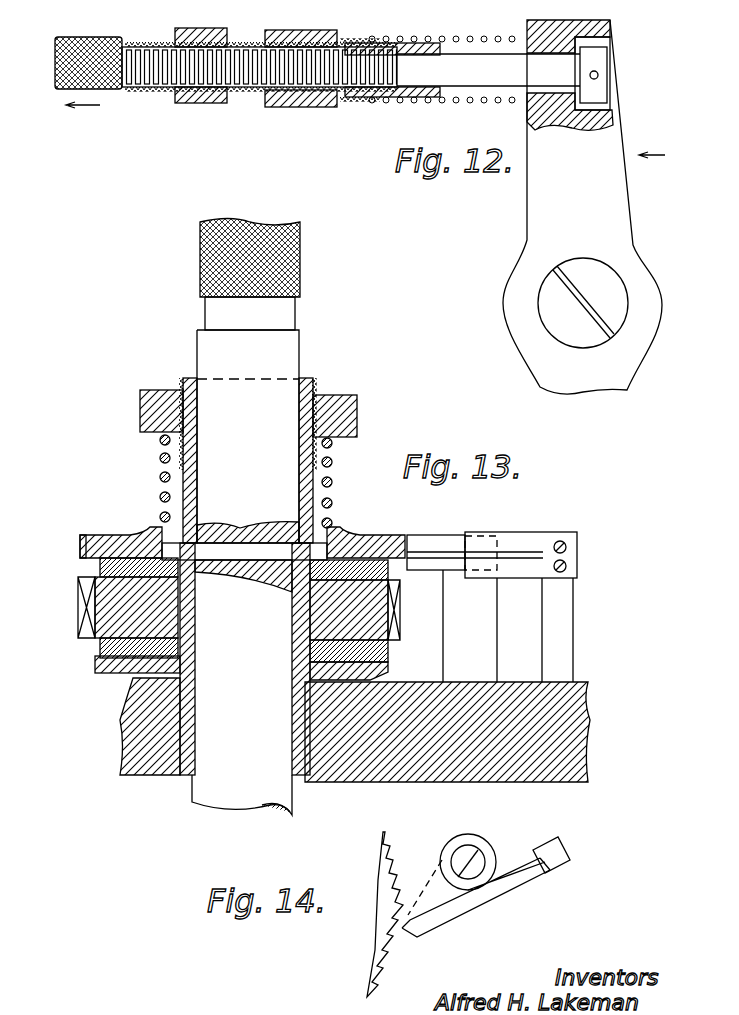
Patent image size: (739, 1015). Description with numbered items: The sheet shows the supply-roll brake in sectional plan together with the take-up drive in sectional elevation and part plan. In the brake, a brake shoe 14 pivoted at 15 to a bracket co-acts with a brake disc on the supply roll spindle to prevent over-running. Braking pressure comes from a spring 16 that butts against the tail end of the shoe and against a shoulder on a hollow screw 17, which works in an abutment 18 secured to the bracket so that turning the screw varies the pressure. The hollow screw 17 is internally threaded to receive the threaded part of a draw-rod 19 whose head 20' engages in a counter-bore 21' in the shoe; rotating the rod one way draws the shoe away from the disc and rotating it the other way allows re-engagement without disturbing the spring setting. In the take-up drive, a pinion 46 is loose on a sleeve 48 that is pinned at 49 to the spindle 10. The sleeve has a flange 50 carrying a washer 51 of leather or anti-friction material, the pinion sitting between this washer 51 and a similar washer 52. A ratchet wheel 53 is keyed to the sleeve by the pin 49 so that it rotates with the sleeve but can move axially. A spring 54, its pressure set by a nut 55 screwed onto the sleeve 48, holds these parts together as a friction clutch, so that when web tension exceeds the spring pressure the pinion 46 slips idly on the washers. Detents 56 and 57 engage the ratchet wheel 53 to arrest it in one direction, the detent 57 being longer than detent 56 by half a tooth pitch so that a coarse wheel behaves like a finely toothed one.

In FIG. 13, the spindle 10 is at (200, 788).
In FIG. 12, the brake shoe 14 is at (545, 362).
In FIG. 12, the pivot 15 is at (545, 289).
In FIG. 12, the spring 16 is at (392, 103).
In FIG. 12, the hollow screw 17 is at (256, 100).
In FIG. 12, the abutment 18 is at (304, 108).
In FIG. 12, the draw-rod 19 is at (474, 78).
In FIG. 12, the head 20' is at (491, 94).
In FIG. 12, the counter-bore 21' is at (593, 104).
In FIG. 13, the pinion 46 is at (85, 606).
In FIG. 13, the sleeve 48 is at (312, 482).
In FIG. 13, the pin 49 is at (262, 552).
In FIG. 13, the flange 50 is at (108, 673).
In FIG. 13, the washer 51 is at (100, 647).
In FIG. 13, the washer 52 is at (100, 565).
In FIG. 13, the ratchet wheel 53 is at (140, 535).
In FIG. 14, the ratchet wheel 53 is at (377, 962).
In FIG. 13, the spring 54 is at (160, 458).
In FIG. 13, the nut 55 is at (140, 405).
In FIG. 13, the detent 56 is at (425, 538).
In FIG. 14, the detent 56 is at (412, 905).
In FIG. 13, the detent 57 is at (437, 565).
In FIG. 14, the detent 57 is at (415, 930).